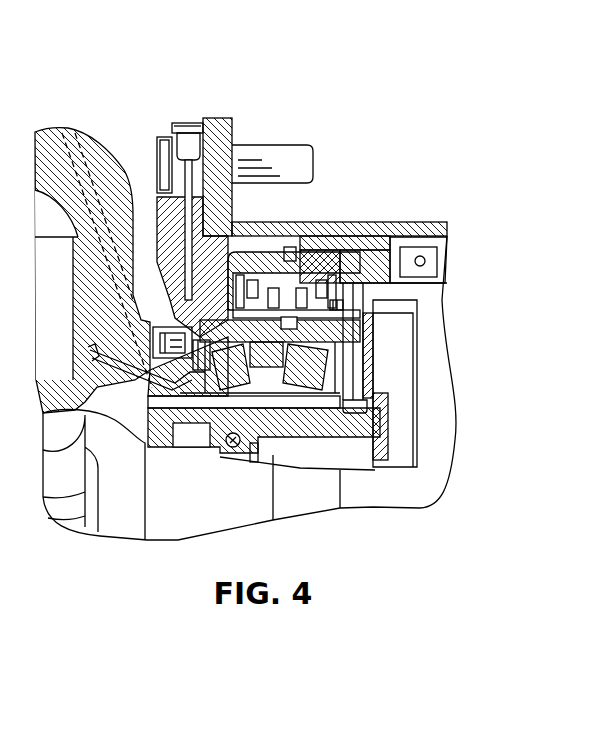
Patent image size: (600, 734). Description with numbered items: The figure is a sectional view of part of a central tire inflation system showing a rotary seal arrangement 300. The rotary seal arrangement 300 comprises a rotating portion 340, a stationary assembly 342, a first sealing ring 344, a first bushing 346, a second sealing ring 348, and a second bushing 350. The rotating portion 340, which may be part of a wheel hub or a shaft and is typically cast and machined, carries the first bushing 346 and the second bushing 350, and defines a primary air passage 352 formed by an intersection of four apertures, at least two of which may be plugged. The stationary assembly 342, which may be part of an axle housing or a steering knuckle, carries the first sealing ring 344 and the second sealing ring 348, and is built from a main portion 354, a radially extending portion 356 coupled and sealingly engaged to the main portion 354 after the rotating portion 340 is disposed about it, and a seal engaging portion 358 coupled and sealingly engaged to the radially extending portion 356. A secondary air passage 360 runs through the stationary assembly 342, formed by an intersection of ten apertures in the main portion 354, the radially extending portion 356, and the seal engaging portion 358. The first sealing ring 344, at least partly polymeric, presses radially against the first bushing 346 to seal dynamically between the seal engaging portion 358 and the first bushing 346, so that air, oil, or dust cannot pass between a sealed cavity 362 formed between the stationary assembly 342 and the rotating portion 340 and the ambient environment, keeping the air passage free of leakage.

The rotary seal arrangement 300 is at (350, 90).
The rotating portion 340 is at (215, 117).
The stationary assembly 342 is at (89, 142).
The first sealing ring 344 is at (286, 275).
The first bushing 346 is at (230, 272).
The second sealing ring 348 is at (373, 250).
The second bushing 350 is at (330, 316).
The primary air passage 352 is at (192, 208).
The main portion 354 is at (108, 165).
The radially extending portion 356 is at (367, 445).
The seal engaging portion 358 is at (405, 245).
The secondary air passage 360 is at (366, 343).
The sealed cavity 362 is at (300, 262).